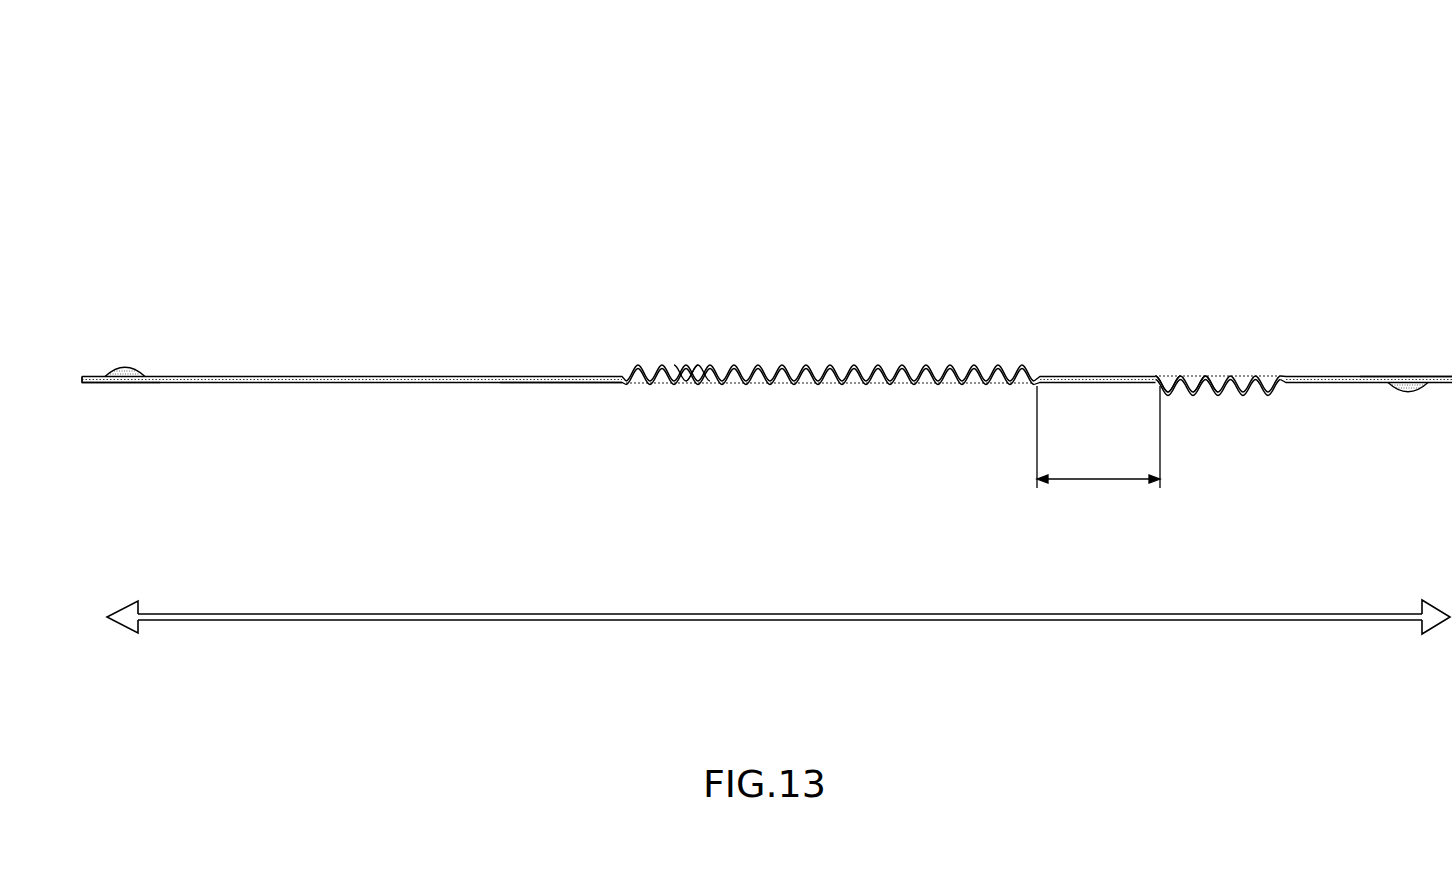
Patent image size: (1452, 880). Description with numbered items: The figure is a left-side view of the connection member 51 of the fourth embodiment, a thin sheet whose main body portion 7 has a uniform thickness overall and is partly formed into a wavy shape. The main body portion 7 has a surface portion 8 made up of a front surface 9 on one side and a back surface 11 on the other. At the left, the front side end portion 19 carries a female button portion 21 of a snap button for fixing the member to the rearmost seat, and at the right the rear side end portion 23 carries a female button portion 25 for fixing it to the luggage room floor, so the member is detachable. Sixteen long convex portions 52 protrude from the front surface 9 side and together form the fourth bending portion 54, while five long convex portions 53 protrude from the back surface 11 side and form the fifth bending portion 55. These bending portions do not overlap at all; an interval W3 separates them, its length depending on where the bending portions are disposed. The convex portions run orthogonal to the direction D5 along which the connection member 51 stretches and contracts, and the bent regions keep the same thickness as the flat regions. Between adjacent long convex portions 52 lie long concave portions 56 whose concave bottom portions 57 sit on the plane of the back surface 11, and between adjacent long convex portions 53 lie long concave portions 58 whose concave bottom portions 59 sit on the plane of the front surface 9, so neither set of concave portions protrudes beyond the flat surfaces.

The connection member 51 is at (767, 337).
The main body portion 7 is at (767, 306).
The surface portion 8 is at (767, 306).
The front surface 9 is at (455, 377).
The back surface 11 is at (561, 385).
The front side end portion 19 is at (124, 384).
The female button portion 21 is at (127, 372).
The rear side end portion 23 is at (1388, 378).
The female button portion 25 is at (1405, 392).
The long convex portion 52 is at (740, 366).
The long convex portion 53 is at (1248, 397).
The fourth bending portion 54 is at (829, 350).
The fifth bending portion 55 is at (1227, 419).
The long concave portion 56 is at (700, 376).
The concave bottom portion 57 is at (668, 304).
The long concave portion 58 is at (1178, 390).
The concave bottom portion 59 is at (1205, 392).
The interval W3 is at (1098, 437).
The direction D5 is at (822, 625).